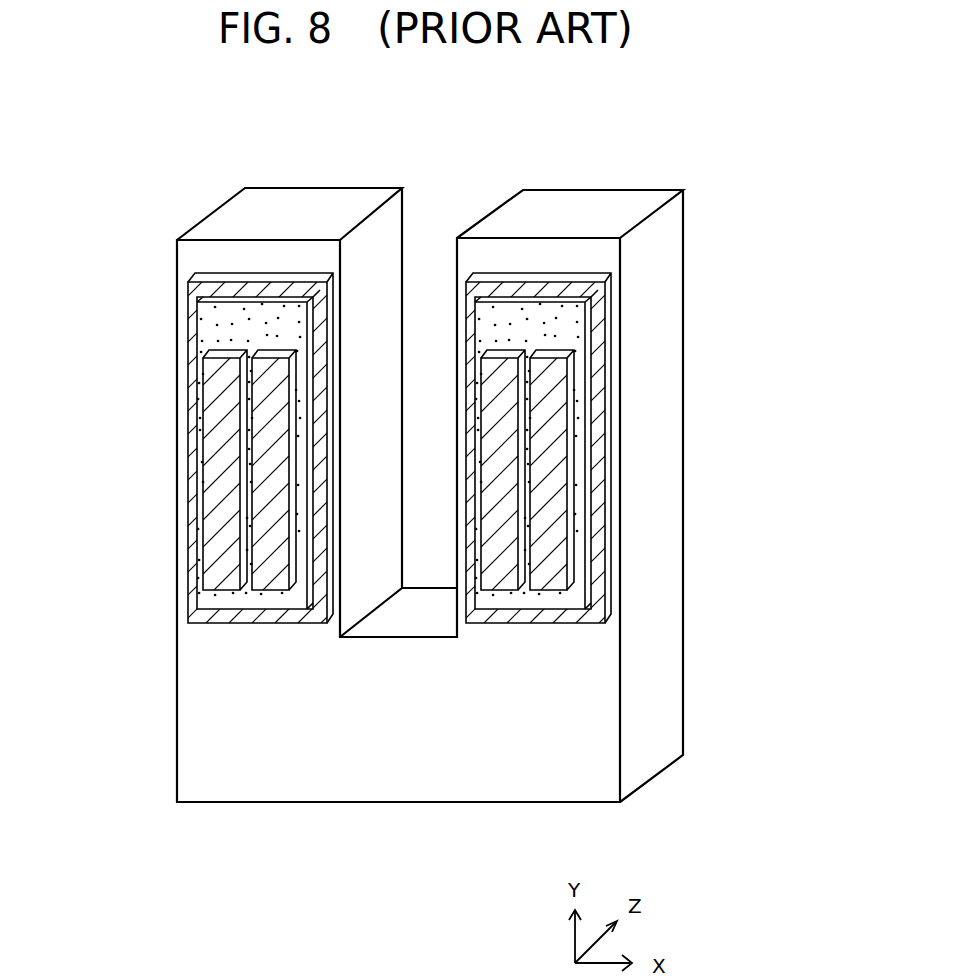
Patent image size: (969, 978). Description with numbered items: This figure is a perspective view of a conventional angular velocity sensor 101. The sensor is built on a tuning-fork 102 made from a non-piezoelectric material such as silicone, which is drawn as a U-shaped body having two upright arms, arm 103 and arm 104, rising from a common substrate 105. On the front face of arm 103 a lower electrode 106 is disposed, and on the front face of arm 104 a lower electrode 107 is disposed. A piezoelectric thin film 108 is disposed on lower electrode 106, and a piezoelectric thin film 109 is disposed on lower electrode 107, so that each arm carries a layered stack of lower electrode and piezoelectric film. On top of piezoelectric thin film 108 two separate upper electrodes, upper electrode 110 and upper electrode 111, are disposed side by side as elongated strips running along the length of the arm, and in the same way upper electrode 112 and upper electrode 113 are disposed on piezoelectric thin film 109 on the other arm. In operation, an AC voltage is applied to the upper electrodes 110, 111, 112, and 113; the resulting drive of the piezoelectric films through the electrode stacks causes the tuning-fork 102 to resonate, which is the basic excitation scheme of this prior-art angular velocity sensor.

The angular velocity sensor 101 is at (502, 180).
The tuning-fork 102 is at (317, 815).
The arm 103 is at (288, 200).
The arm 104 is at (598, 202).
The substrate 105 is at (390, 773).
The lower electrode 106 is at (196, 294).
The lower electrode 107 is at (588, 288).
The piezoelectric thin film 108 is at (205, 340).
The piezoelectric thin film 109 is at (570, 340).
The upper electrode 110 is at (267, 468).
The upper electrode 111 is at (210, 423).
The upper electrode 112 is at (508, 512).
The upper electrode 113 is at (550, 396).